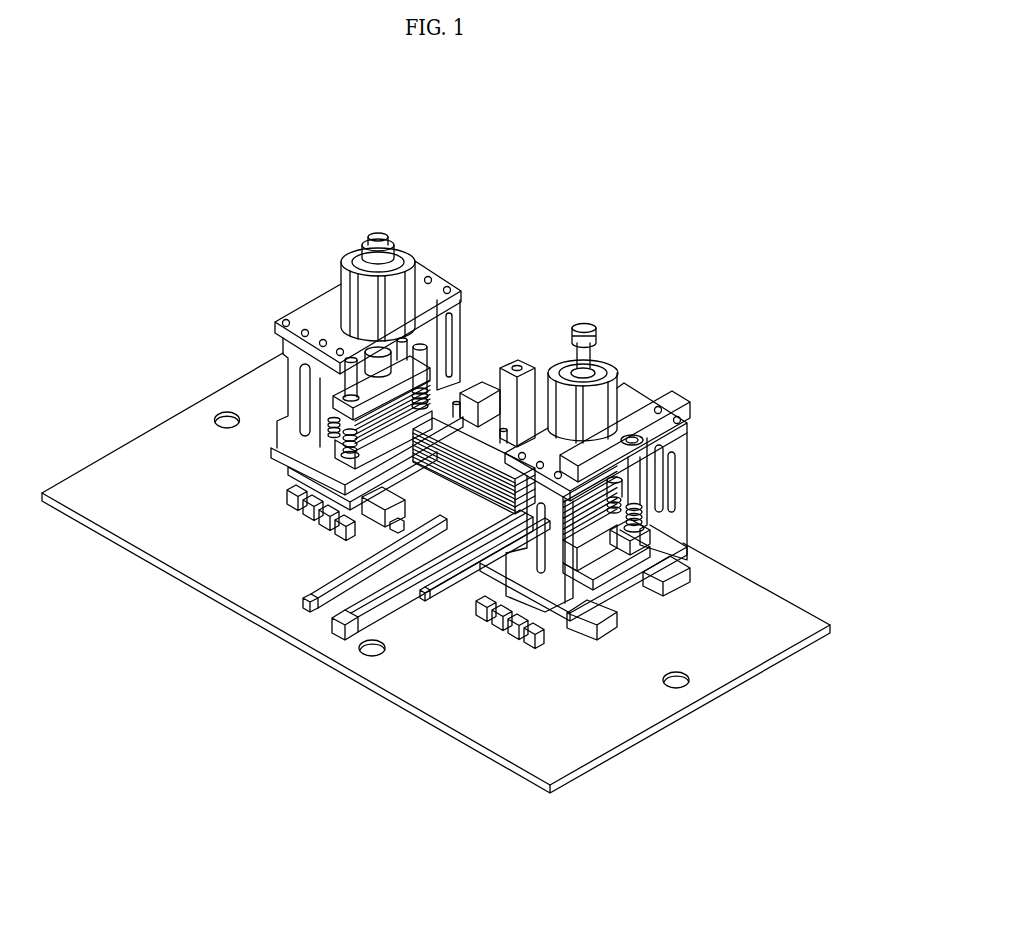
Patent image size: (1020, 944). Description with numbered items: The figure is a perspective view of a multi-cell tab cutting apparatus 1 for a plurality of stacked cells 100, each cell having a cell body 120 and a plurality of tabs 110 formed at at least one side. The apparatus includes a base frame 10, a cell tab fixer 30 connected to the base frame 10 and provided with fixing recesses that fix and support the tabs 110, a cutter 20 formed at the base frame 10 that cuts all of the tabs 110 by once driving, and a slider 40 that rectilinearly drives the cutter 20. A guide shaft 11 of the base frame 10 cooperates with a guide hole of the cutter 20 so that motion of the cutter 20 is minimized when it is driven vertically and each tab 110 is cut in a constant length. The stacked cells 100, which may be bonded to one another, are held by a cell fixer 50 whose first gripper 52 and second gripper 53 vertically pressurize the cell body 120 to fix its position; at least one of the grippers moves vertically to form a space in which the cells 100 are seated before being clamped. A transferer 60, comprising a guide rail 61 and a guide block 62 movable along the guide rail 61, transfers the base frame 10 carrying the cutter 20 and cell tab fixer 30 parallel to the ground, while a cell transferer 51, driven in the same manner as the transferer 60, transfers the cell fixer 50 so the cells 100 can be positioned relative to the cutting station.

The multi-cell tab cutting apparatus 1 is at (76, 174).
The base frame 10 is at (430, 272).
The guide shaft 11 is at (385, 413).
The cutter 20 is at (340, 408).
The cell tab fixer 30 is at (376, 352).
The slider 40 is at (596, 342).
The cell fixer 50 is at (410, 660).
The cell transferer 51 is at (320, 613).
The first gripper 52 is at (352, 637).
The second gripper 53 is at (487, 520).
The transferer 60 is at (239, 583).
The guide rail 61 is at (380, 510).
The guide block 62 is at (317, 517).
The cells 100 is at (494, 354).
The tabs 110 is at (425, 410).
The cell body 120 is at (460, 390).